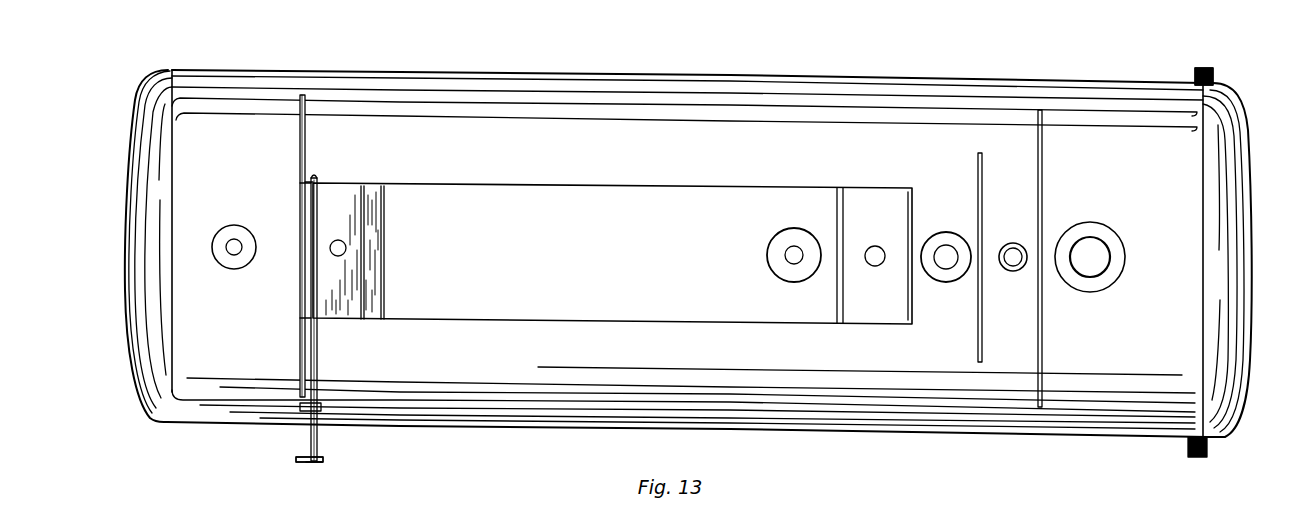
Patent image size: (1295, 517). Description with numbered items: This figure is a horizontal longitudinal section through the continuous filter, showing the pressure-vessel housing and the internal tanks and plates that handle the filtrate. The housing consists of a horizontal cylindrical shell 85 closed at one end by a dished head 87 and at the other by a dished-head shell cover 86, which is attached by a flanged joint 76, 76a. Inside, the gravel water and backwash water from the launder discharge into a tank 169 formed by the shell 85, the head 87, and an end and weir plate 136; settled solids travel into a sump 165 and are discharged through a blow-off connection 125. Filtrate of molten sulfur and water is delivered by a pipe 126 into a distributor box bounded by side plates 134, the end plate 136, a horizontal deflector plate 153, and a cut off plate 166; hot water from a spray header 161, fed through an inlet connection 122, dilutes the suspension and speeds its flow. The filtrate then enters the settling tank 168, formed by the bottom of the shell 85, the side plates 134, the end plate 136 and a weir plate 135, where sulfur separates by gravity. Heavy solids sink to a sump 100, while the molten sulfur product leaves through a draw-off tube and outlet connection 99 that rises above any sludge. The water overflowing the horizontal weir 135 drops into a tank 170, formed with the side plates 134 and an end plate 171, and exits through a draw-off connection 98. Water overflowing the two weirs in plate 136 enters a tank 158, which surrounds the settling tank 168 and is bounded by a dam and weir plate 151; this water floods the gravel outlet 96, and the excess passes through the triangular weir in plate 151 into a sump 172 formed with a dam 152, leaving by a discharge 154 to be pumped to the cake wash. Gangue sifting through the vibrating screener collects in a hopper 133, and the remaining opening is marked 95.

The horizontal cylindrical shell 85 is at (660, 75).
The dished head 87 is at (145, 113).
The shell cover 86 is at (1236, 104).
The flanged joint 76 is at (1196, 72).
The flanged joint 76a is at (1213, 80).
The end and weir plate 136 is at (299, 147).
The spray header 161 is at (318, 355).
The inlet connection 122 is at (320, 457).
The dam and weir plate 151 is at (978, 168).
The dam 152 is at (1043, 178).
The side plates 134 is at (500, 183).
The settling tank 168 is at (610, 254).
The cut off plate 166 is at (364, 243).
The horizontal deflector plate 153 is at (385, 227).
The horizontal weir 135 is at (836, 308).
The tank 170 is at (876, 256).
The end plate 171 is at (912, 311).
The sump 172 is at (1010, 275).
The tank 169 is at (237, 255).
The tank 158 is at (687, 262).
The sump 165 is at (250, 232).
The blow-off connection 125 is at (240, 252).
The pipe 126 is at (325, 229).
The sump 100 is at (768, 247).
The draw-off tube and outlet connection 99 is at (786, 259).
The draw-off connection 98 is at (872, 247).
The gravel outlet 96 is at (967, 234).
The discharge 154 is at (1004, 237).
The gangue hopper 133 is at (1108, 253).
The opening 95 is at (1124, 275).